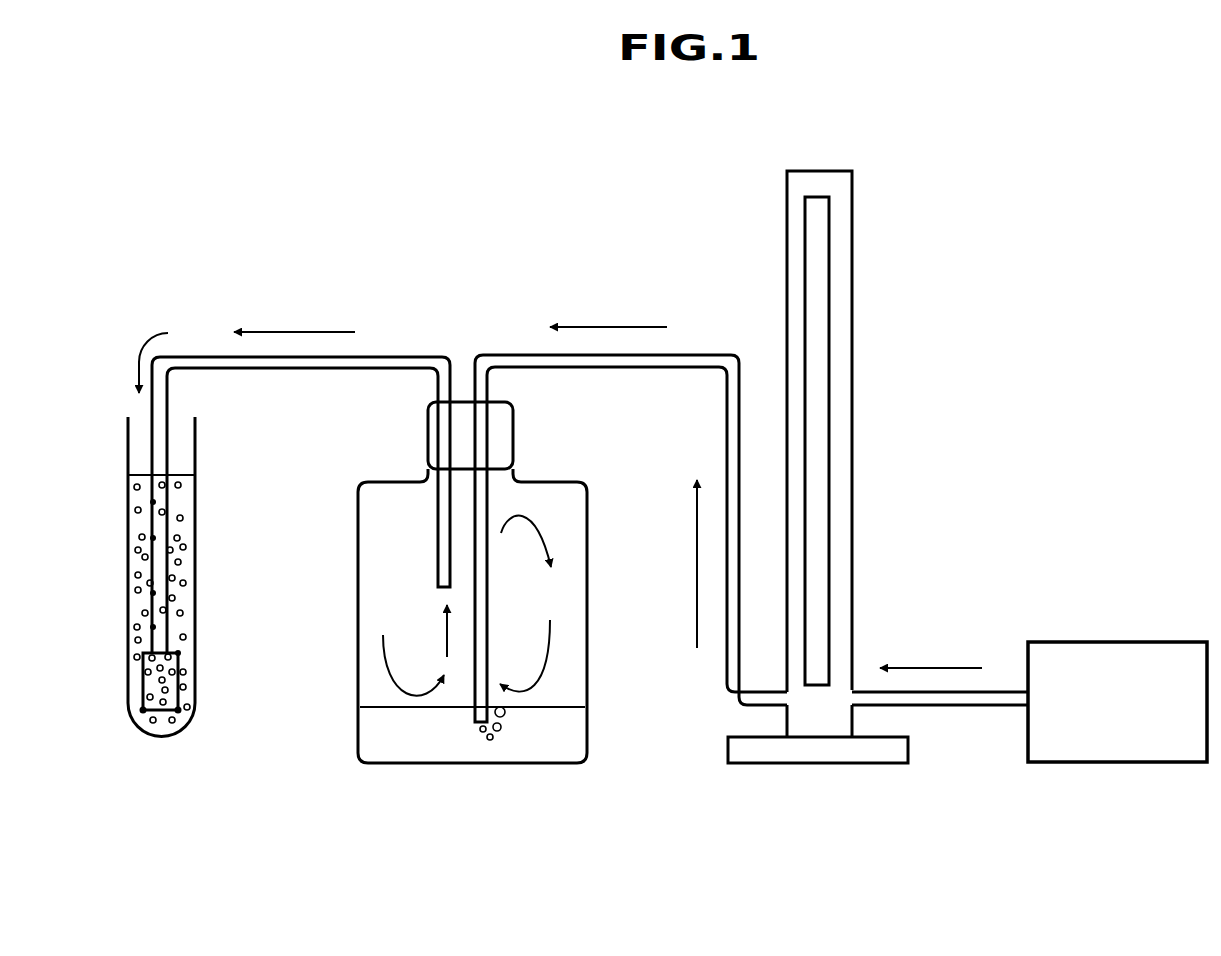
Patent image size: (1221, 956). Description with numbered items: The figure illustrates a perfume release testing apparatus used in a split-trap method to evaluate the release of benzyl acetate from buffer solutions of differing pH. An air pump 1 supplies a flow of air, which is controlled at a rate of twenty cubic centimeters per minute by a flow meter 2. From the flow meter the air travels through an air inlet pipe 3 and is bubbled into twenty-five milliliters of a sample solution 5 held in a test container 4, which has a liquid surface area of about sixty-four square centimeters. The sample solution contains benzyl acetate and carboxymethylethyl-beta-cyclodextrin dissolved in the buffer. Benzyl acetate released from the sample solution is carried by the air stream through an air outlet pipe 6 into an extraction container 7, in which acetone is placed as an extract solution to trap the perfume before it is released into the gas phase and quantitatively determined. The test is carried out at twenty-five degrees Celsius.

The air pump 1 is at (1137, 634).
The flow meter 2 is at (858, 545).
The air inlet pipe 3 is at (712, 346).
The test container 4 is at (596, 745).
The sample solution 5 is at (377, 748).
The air outlet pipe 6 is at (400, 346).
The extraction container 7 is at (204, 580).